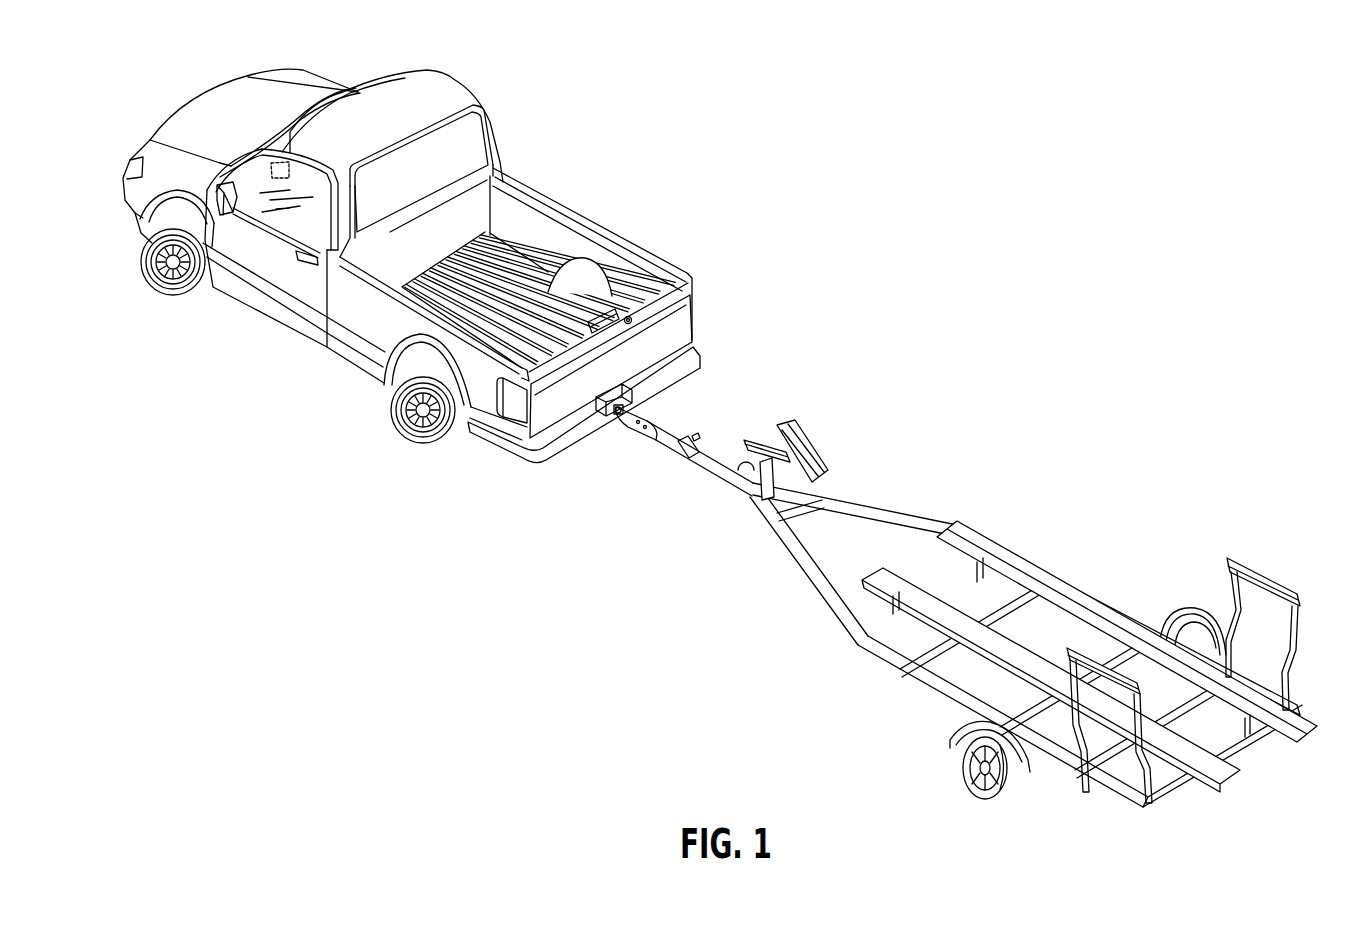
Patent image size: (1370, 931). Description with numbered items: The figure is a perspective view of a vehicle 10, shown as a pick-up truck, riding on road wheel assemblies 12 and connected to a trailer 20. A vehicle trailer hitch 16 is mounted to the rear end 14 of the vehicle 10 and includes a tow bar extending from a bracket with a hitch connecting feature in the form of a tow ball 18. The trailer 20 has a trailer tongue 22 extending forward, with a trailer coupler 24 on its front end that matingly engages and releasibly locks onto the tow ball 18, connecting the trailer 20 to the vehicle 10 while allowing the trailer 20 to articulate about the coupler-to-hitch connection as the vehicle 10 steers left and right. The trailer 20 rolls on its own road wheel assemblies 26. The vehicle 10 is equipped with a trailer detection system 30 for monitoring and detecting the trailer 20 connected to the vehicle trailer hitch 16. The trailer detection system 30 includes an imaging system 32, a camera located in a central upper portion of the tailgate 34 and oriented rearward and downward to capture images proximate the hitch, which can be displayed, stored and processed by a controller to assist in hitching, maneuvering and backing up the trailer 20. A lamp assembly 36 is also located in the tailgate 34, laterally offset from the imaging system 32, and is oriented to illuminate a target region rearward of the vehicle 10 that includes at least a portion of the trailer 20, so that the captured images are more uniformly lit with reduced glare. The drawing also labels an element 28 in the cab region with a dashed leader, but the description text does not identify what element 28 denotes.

The vehicle 10 is at (489, 60).
The road wheel assemblies 12 is at (176, 296).
The rear end 14 is at (546, 448).
The vehicle trailer hitch 16 is at (614, 409).
The tow ball 18 is at (620, 412).
The trailer 20 is at (1069, 509).
The trailer tongue 22 is at (700, 462).
The trailer coupler 24 is at (628, 433).
The road wheel assemblies 26 is at (1190, 610).
The vehicle controller 28 is at (288, 163).
The trailer detection system 30 is at (655, 333).
The imaging system 32 is at (606, 316).
The tailgate 34 is at (652, 346).
The lamp assembly 36 is at (630, 318).